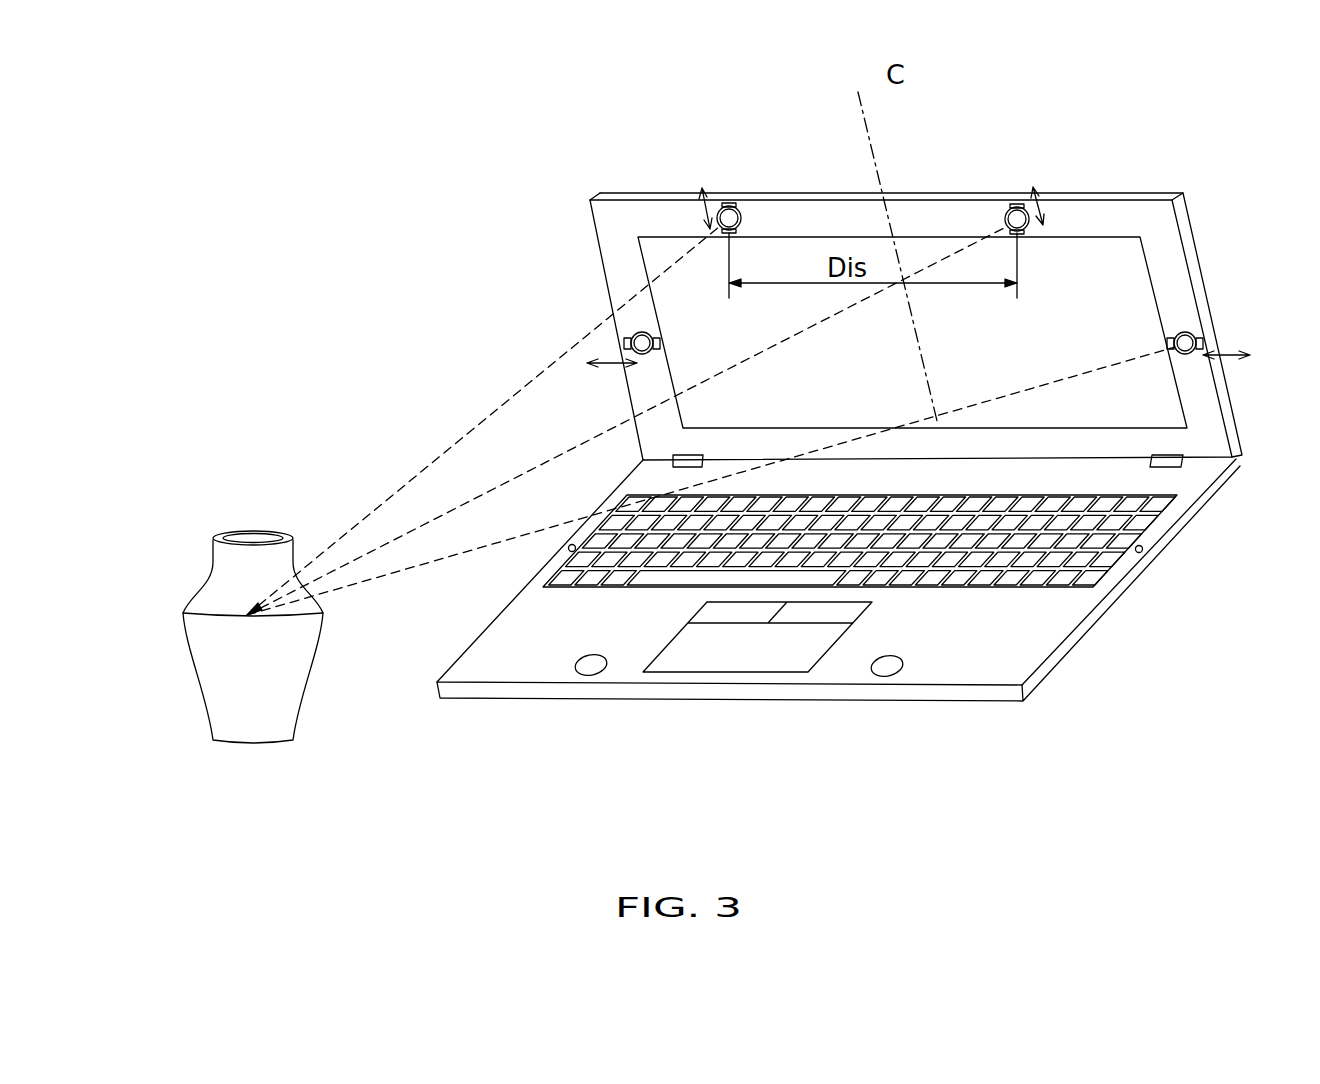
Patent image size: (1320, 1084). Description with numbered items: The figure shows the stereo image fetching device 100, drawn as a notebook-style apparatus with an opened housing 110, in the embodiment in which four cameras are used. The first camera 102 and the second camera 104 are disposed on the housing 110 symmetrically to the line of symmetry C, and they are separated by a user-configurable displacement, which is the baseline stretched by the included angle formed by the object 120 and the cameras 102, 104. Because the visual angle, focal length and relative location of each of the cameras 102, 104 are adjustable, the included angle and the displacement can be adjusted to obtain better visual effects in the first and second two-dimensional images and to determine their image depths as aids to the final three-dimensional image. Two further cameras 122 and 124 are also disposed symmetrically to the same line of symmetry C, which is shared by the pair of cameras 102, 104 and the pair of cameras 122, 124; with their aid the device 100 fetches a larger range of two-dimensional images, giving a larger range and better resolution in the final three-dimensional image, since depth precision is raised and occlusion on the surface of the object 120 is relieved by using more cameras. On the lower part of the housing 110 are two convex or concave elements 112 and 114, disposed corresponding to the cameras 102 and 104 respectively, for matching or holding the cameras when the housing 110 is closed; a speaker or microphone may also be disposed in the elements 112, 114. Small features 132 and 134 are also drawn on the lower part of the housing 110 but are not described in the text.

The stereo image fetching device 100 is at (405, 278).
The first camera 102 is at (740, 210).
The second camera 104 is at (1004, 216).
The housing 110 is at (1198, 261).
The convex or concave element 112 is at (593, 668).
The convex or concave element 114 is at (888, 668).
The object 120 is at (220, 535).
The camera 122 is at (631, 340).
The camera 124 is at (1190, 335).
The third distance sensor 132 is at (569, 549).
The fourth distance sensor 134 is at (1145, 551).